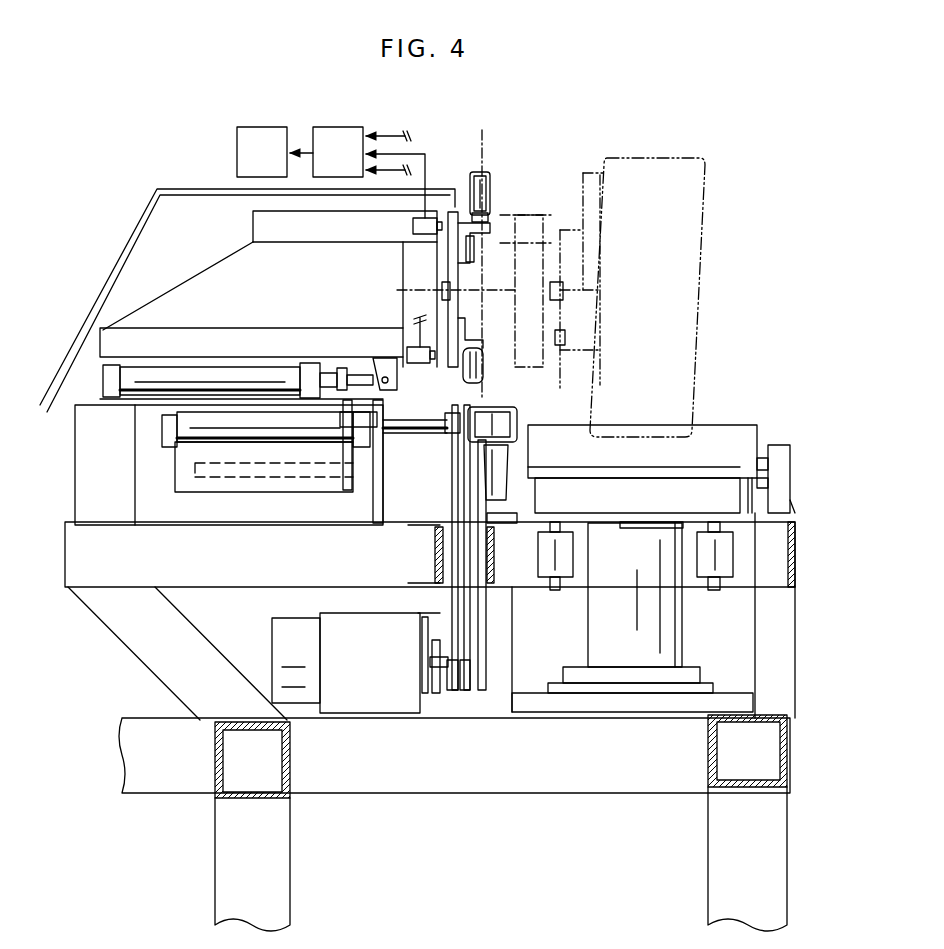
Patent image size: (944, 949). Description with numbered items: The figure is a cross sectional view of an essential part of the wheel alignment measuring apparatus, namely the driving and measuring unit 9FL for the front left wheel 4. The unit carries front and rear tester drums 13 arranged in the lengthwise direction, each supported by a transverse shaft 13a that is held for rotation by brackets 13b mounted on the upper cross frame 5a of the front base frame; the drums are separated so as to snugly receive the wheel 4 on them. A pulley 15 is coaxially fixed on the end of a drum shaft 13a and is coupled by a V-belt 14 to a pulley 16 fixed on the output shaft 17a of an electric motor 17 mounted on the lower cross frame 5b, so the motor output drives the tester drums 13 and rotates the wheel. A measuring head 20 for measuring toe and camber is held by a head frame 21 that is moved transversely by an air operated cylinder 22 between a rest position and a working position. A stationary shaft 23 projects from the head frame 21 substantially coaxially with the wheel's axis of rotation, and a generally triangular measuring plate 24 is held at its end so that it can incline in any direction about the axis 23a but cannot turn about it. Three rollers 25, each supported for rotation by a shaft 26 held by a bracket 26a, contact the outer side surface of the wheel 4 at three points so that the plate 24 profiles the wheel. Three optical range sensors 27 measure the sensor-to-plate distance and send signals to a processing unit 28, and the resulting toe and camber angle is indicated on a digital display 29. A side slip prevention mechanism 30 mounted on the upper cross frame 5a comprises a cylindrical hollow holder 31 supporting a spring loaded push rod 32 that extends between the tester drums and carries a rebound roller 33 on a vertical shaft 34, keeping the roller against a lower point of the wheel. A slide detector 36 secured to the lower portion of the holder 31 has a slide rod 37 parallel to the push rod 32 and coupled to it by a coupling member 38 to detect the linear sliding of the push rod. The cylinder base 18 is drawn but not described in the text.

The vehicle wheel 4 is at (717, 162).
The upper cross frame 5a is at (82, 577).
The lower cross frame 5b is at (340, 777).
The driving and measuring unit 9FL is at (767, 377).
The tester drum 13 is at (733, 428).
The shaft 13a is at (768, 447).
The bracket 13b is at (782, 481).
The V-belt 14 is at (468, 620).
The pulley 15 is at (507, 500).
The pulley 16 is at (437, 683).
The electric motor 17 is at (380, 697).
The output shaft 17a is at (434, 640).
The lift cylinder base 18 is at (617, 705).
The measuring head 20 is at (227, 227).
The head frame 21 is at (195, 277).
The air operated cylinder 22 is at (222, 367).
The stationary shaft 23 is at (440, 290).
The axis of the stationary shaft 23a is at (490, 290).
The measuring plate 24 is at (453, 257).
The roller 25 is at (490, 196).
The shaft 26 is at (463, 197).
The bracket 26a is at (473, 240).
The optical range sensor 27 is at (413, 226).
The processing unit 28 is at (337, 127).
The digital display 29 is at (255, 127).
The side slip prevention mechanism 30 is at (197, 497).
The cylindrical hollow holder 31 is at (248, 443).
The push rod 32 is at (412, 423).
The rebound roller 33 is at (510, 407).
The vertical shaft 34 is at (487, 398).
The slide detector 36 is at (303, 497).
The slide rod 37 is at (358, 473).
The coupling member 38 is at (437, 457).